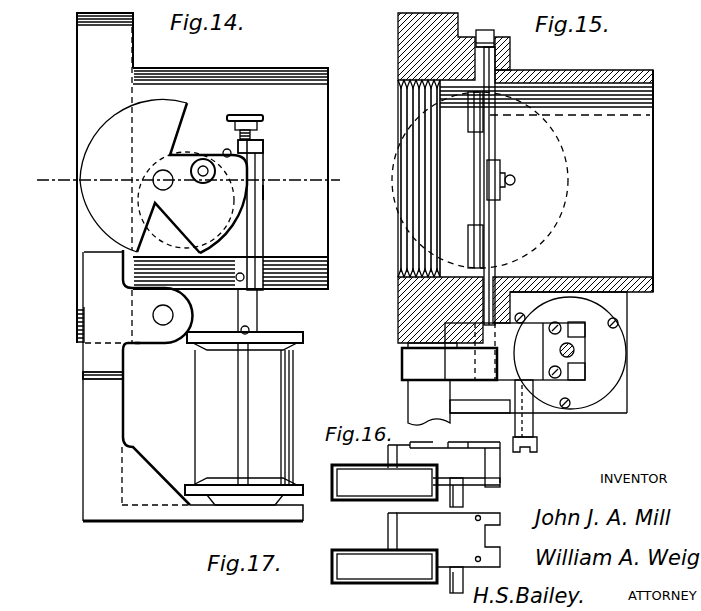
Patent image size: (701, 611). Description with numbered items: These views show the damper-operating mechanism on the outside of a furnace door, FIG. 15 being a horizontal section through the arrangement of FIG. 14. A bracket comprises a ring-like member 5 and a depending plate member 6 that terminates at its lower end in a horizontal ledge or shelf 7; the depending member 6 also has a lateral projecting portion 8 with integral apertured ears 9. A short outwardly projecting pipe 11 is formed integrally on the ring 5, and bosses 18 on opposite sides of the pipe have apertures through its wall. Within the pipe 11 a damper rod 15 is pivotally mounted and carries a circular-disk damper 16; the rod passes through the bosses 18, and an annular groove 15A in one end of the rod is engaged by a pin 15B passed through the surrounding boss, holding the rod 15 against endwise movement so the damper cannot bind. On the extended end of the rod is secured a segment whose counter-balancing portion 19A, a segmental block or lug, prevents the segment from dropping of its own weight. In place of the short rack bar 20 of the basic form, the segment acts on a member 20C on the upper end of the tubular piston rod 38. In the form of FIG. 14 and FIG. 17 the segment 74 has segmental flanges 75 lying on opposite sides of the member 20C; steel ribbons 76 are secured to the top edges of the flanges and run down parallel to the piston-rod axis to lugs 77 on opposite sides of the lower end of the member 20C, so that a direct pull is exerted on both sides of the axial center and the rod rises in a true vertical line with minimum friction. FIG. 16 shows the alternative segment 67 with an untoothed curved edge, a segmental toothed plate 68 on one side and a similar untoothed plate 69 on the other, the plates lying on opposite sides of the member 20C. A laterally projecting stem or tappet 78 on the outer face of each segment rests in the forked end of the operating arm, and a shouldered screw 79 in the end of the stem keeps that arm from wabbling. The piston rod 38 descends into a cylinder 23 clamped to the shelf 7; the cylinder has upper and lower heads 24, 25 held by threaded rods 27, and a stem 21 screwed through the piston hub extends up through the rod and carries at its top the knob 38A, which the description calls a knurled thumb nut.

In FIG. 14, the ring-like member 5 is at (77, 49).
In FIG. 15, the ring-like member 5 is at (398, 40).
In FIG. 14, the depending plate member 6 is at (95, 420).
In FIG. 14, the horizontal ledge or shelf 7 is at (160, 517).
In FIG. 15, the horizontal ledge or shelf 7 is at (628, 414).
In FIG. 14, the lateral projecting portion 8 is at (95, 361).
In FIG. 14, the apertured ears 9 is at (155, 332).
In FIG. 14, the outwardly projecting pipe 11 is at (272, 73).
In FIG. 15, the outwardly projecting pipe 11 is at (653, 174).
In FIG. 14, the damper rod 15 is at (161, 172).
In FIG. 15, the damper rod 15 is at (497, 219).
In FIG. 15, the annular groove 15A is at (510, 53).
In FIG. 15, the pin 15B is at (480, 44).
In FIG. 15, the damper 16 is at (478, 176).
In FIG. 15, the bosses 18 is at (501, 30).
In FIG. 14, the counter-balancing portion 19A is at (121, 118).
In FIG. 15, the counter-balancing portion 19A is at (402, 361).
In FIG. 16, the counter-balancing portion 19A is at (380, 484).
In FIG. 17, the counter-balancing portion 19A is at (380, 572).
In FIG. 15, the rack bar 20 is at (582, 356).
In FIG. 14, the member 20C is at (264, 192).
In FIG. 14, the stem 21 is at (255, 138).
In FIG. 15, the stem 21 is at (576, 349).
In FIG. 14, the cylinder 23 is at (195, 390).
In FIG. 14, the upper head 24 is at (303, 335).
In FIG. 15, the upper head 24 is at (600, 391).
In FIG. 14, the lower head 25 is at (185, 489).
In FIG. 14, the threaded rods 27 is at (242, 407).
In FIG. 14, the tubular piston rod 38 is at (240, 311).
In FIG. 14, the knob 38A is at (246, 115).
In FIG. 16, the segment 67 is at (444, 465).
In FIG. 16, the segmental toothed plate 68 is at (490, 487).
In FIG. 16, the untoothed segment plate 69 is at (472, 445).
In FIG. 14, the segment 74 is at (175, 214).
In FIG. 15, the segment 74 is at (515, 351).
In FIG. 17, the segment 74 is at (400, 522).
In FIG. 14, the segmental flanges 75 is at (245, 168).
In FIG. 17, the segmental flanges 75 is at (485, 521).
In FIG. 14, the steel ribbons 76 is at (252, 229).
In FIG. 15, the steel ribbons 76 is at (545, 369).
In FIG. 14, the lugs 77 is at (252, 280).
In FIG. 15, the lugs 77 is at (577, 322).
In FIG. 14, the stem or tappet 78 is at (202, 160).
In FIG. 15, the stem or tappet 78 is at (533, 426).
In FIG. 16, the stem or tappet 78 is at (452, 490).
In FIG. 17, the stem or tappet 78 is at (455, 589).
In FIG. 15, the shouldered screw 79 is at (538, 448).